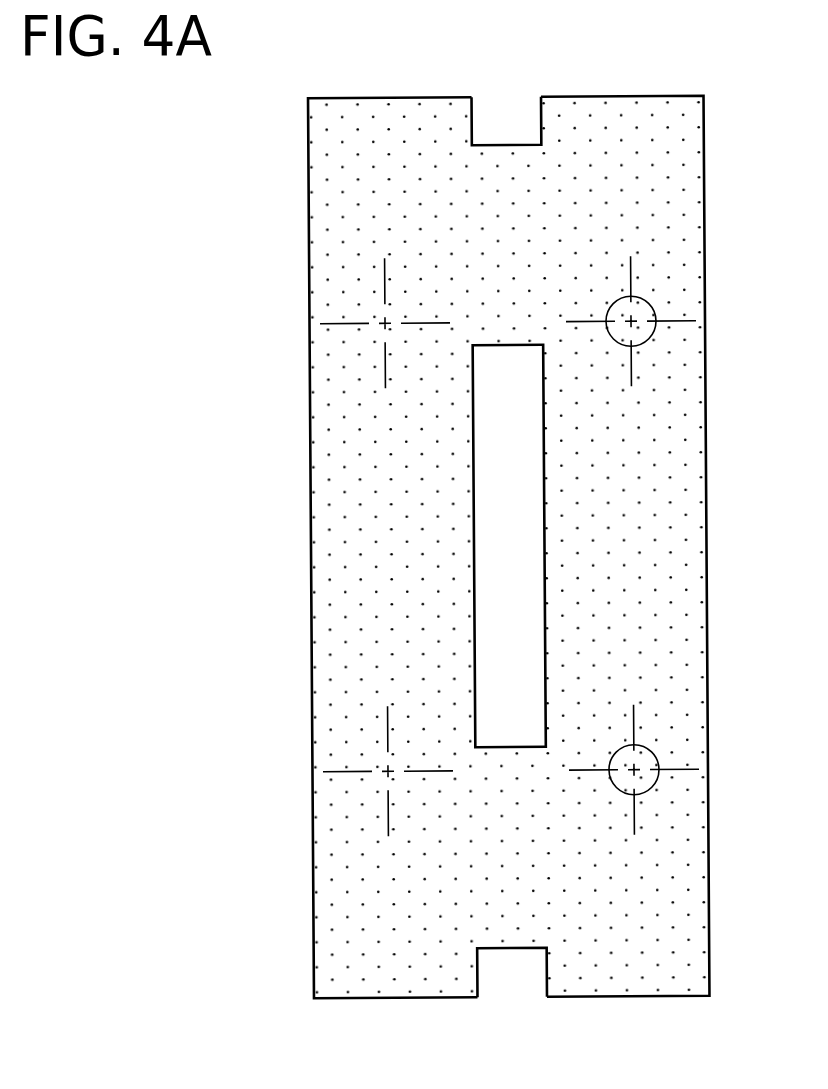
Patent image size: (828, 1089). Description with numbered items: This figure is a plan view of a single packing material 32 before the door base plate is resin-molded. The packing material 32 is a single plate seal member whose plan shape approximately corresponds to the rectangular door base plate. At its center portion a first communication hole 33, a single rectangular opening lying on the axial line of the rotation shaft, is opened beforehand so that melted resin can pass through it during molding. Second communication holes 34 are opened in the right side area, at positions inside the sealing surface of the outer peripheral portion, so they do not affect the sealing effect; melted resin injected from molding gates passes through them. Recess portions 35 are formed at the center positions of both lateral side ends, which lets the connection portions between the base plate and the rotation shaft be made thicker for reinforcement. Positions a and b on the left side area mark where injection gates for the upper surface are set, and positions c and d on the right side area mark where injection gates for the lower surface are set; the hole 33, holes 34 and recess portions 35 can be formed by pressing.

The packing material 32 is at (306, 421).
The first communication hole 33 is at (518, 478).
The second communication hole 34 is at (648, 300).
The recess portion 35 is at (539, 117).
The injection gate position a is at (384, 321).
The injection gate position b is at (386, 770).
The injection gate position c is at (632, 322).
The injection gate position d is at (634, 770).